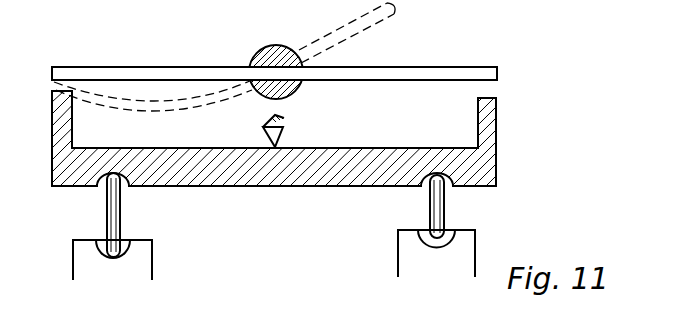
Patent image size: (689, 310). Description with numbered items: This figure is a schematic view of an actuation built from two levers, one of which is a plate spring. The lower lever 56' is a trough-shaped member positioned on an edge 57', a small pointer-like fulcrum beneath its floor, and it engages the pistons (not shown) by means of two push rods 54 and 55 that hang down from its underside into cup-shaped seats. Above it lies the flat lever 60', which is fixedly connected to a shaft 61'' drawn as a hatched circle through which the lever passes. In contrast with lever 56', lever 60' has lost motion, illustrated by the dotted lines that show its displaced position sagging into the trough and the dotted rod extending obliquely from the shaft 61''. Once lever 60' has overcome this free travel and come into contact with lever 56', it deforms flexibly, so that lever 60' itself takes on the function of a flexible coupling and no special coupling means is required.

The shaft 61'' is at (321, 51).
The lever 60' is at (274, 51).
The lever 56' is at (307, 150).
The edge 57' is at (264, 172).
The push rod 55 is at (120, 210).
The push rod 54 is at (445, 205).